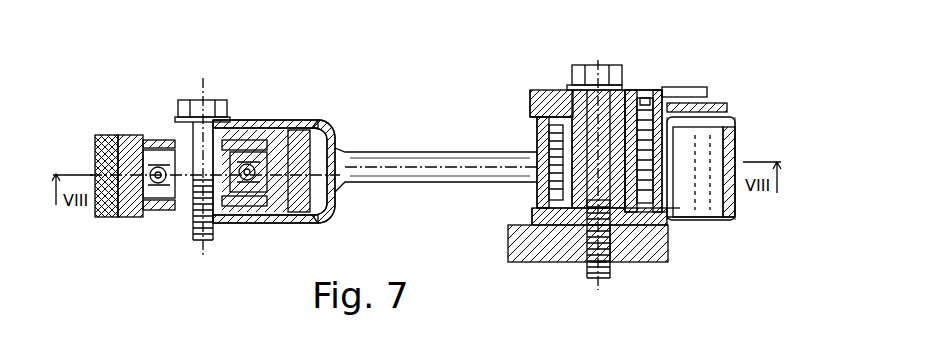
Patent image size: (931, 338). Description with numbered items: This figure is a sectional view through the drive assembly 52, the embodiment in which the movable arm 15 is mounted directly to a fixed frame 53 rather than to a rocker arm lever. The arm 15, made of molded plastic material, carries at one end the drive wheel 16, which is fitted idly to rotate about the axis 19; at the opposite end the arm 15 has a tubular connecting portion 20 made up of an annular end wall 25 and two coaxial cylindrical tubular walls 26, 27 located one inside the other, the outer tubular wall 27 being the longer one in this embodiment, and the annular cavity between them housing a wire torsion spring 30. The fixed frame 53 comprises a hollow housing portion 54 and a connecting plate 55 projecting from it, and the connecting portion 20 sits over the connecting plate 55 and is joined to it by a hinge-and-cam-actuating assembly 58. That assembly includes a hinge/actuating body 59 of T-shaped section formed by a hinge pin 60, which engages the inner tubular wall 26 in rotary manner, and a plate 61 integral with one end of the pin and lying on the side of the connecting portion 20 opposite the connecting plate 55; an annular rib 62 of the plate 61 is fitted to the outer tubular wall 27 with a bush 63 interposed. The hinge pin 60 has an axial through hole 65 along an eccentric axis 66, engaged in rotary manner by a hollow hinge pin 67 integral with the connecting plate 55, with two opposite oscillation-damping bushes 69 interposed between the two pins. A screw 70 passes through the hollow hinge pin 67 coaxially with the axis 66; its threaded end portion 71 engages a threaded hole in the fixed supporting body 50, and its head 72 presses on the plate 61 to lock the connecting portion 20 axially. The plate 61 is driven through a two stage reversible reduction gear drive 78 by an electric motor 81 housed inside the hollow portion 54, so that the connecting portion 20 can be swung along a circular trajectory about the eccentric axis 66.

The movable support member or arm 15 is at (417, 187).
The drive wheel 16 is at (103, 137).
The axis 19 is at (197, 92).
The tubular connecting portion 20 is at (537, 128).
The annular end wall 25 is at (675, 245).
The inner tubular wall 26 is at (630, 255).
The outer tubular wall 27 is at (690, 220).
The wire torsion spring 30 is at (520, 207).
The fixed supporting body 50 is at (560, 262).
The drive assembly 52 is at (752, 97).
The fixed frame 53 is at (735, 217).
The hollow housing portion 54 is at (735, 127).
The connecting plate 55 is at (530, 262).
The hinge-and-cam-actuating assembly 58 is at (643, 80).
The hinge/actuating body 59 is at (530, 110).
The hinge pin 60 is at (493, 183).
The plate 61 is at (548, 90).
The annular rib 62 is at (535, 112).
The bush 63 is at (665, 95).
The axial through hole 65 is at (620, 93).
The eccentric axis 66 is at (603, 280).
The hinge pin 67 is at (558, 98).
The oscillation-damping bushes 69 is at (650, 88).
The screw 70 is at (585, 270).
The threaded end portion 71 is at (595, 278).
The head 72 is at (592, 67).
The two stage reversible reduction gear drive 78 is at (730, 102).
The electric motor 81 is at (710, 155).